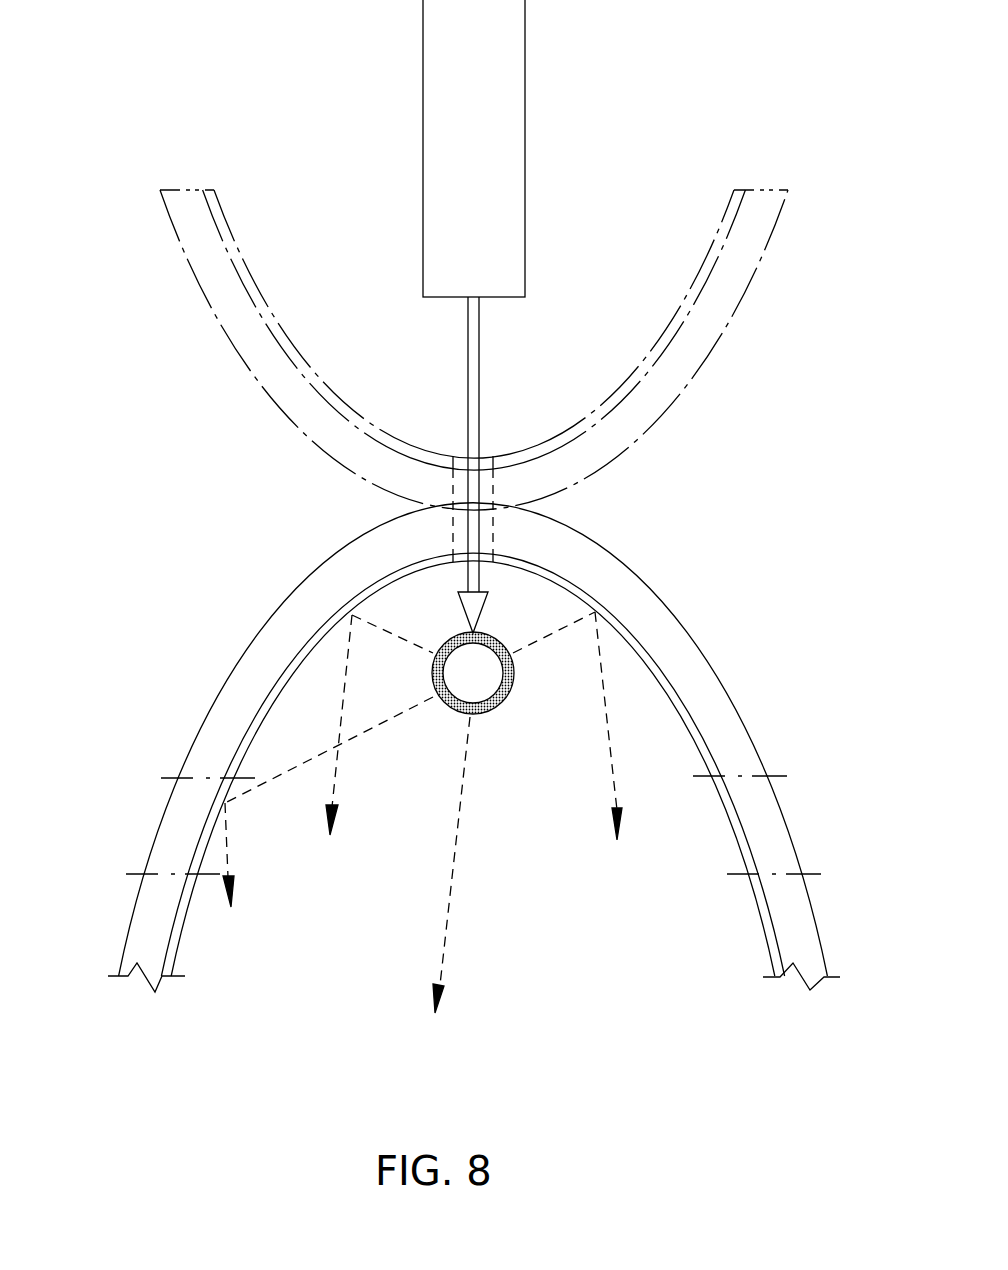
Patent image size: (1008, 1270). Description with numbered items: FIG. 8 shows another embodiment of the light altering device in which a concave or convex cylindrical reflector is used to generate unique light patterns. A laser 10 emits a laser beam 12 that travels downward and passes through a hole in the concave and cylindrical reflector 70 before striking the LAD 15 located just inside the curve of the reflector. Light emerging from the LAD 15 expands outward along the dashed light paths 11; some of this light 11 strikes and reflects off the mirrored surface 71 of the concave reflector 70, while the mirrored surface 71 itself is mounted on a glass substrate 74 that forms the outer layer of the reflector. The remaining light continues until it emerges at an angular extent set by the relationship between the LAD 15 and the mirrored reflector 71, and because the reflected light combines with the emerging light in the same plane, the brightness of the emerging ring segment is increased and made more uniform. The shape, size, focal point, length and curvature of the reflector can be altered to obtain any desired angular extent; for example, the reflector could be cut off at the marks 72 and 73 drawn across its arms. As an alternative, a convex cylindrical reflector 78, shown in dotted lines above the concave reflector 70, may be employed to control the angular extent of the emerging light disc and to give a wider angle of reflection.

The laser 10 is at (423, 114).
The laser beam 12 is at (480, 392).
The convex cylindrical reflector 78 is at (773, 238).
The concave cylindrical reflector 70 is at (457, 736).
The glass substrate 74 is at (135, 898).
The mirrored surface 71 is at (180, 950).
The mark 73 is at (207, 778).
The mark 72 is at (133, 874).
The LAD 15 is at (490, 706).
The light rays 11 is at (333, 790).